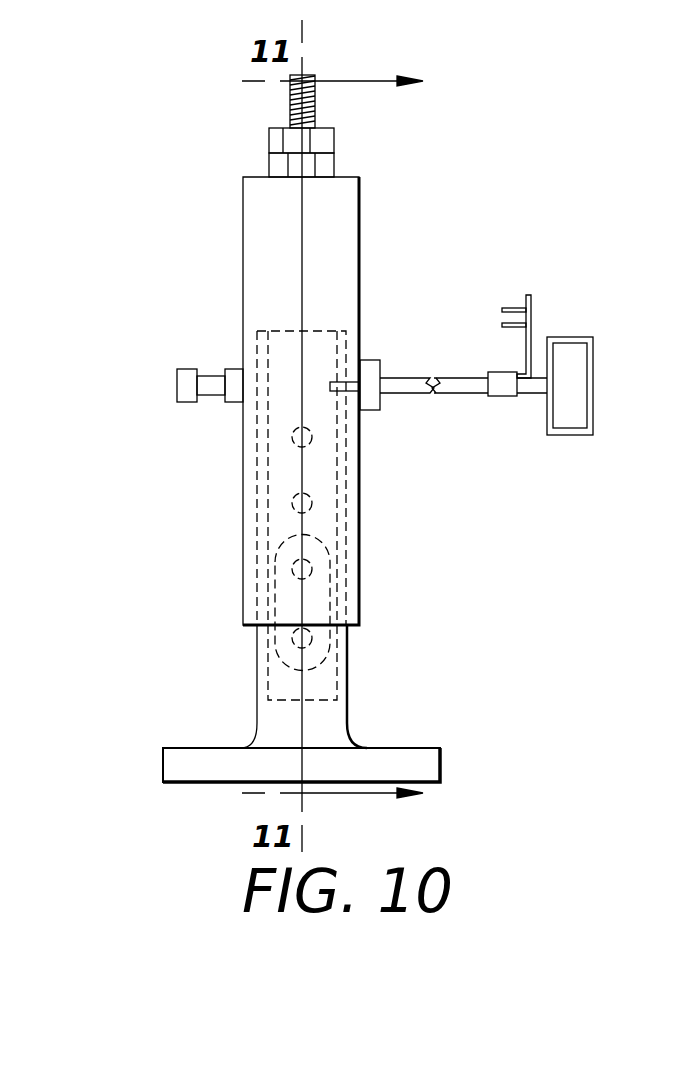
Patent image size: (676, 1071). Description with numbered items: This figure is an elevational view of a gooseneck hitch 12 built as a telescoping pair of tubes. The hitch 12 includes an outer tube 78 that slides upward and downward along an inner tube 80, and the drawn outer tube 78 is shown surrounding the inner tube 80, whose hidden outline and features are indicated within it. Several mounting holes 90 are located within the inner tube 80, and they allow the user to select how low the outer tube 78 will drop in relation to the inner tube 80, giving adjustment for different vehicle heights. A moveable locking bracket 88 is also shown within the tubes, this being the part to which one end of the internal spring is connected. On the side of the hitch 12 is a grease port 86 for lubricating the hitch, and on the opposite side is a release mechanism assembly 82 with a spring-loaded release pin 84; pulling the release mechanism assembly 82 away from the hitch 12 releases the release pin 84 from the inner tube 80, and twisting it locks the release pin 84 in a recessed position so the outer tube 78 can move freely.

The hitch 12 is at (180, 168).
The outer tube 78 is at (359, 251).
The inner tube 80 is at (342, 331).
The release mechanism assembly 82 is at (541, 329).
The release pin 84 is at (352, 380).
The grease port 86 is at (204, 369).
The locking bracket 88 is at (273, 643).
The mounting holes 90 is at (295, 497).